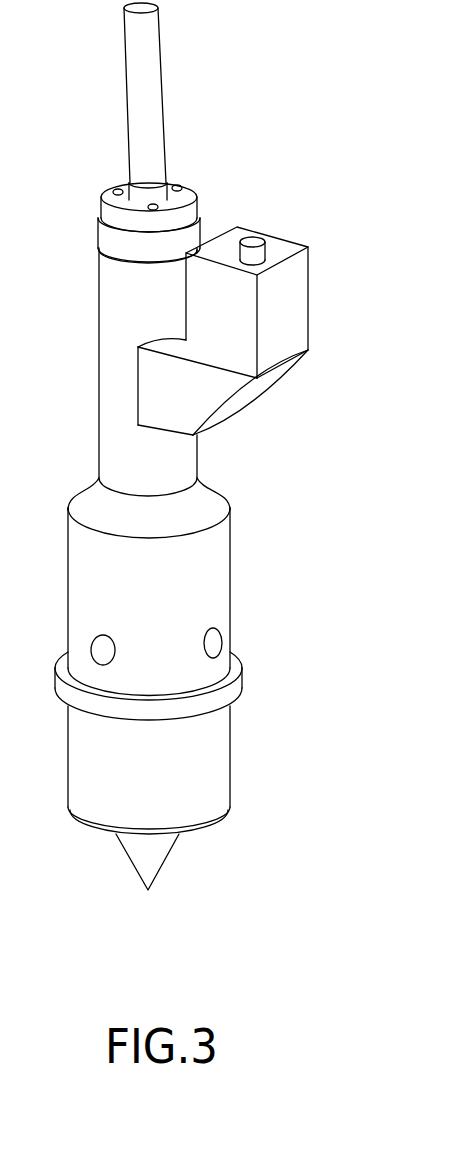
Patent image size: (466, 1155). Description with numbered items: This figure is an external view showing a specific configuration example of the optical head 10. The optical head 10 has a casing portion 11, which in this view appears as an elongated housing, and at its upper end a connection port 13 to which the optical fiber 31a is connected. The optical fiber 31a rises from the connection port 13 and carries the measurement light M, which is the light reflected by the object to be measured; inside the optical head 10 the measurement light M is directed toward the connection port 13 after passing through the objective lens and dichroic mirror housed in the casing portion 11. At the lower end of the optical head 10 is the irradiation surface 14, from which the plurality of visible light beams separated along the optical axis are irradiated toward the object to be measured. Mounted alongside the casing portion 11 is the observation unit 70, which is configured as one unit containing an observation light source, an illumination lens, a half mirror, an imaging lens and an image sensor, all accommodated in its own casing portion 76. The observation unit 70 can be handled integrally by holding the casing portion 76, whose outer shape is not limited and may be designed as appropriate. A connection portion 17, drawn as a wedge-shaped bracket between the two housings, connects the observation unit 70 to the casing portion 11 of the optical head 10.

The optical head 10 is at (247, 128).
The optical fiber 31a is at (128, 53).
The connection port 13 is at (125, 183).
The casing portion 11 is at (108, 458).
The observation unit 70 is at (290, 251).
The casing portion 76 is at (300, 320).
The connection portion 17 is at (136, 390).
The irradiation surface 14 is at (205, 828).
The measurement light M is at (132, 866).